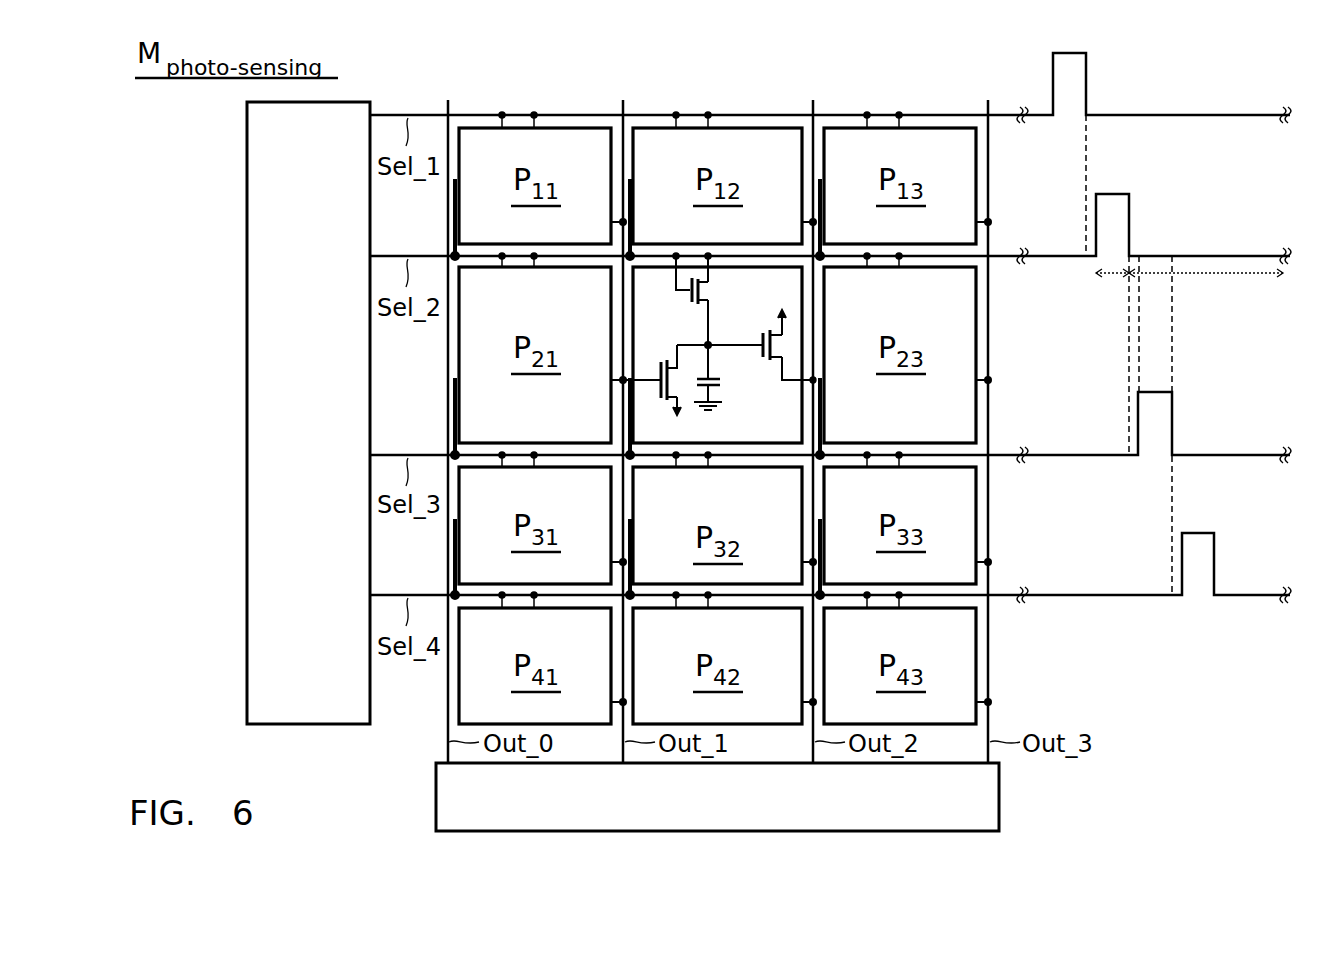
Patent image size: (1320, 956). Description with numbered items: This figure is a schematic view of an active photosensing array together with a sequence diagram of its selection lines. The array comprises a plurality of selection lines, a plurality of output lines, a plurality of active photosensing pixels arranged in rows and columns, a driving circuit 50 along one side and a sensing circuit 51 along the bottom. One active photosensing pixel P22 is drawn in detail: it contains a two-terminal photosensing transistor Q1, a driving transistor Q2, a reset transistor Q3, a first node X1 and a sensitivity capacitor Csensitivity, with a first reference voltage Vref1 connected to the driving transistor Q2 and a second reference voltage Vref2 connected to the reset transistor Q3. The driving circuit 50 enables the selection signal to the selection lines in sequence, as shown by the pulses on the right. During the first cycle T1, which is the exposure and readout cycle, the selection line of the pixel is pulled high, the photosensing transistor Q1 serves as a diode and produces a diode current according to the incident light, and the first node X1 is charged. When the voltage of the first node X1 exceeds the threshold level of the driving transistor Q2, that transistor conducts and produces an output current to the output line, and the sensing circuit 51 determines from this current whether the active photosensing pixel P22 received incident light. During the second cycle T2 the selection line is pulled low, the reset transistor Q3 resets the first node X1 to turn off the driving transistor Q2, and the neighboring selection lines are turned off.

The driving circuit 50 is at (310, 726).
The sensing circuit 51 is at (1000, 797).
The active photosensing pixel P22 is at (805, 417).
The two-terminal photosensing transistor Q1 is at (705, 290).
The driving transistor Q2 is at (762, 350).
The reset transistor Q3 is at (670, 367).
The first node X1 is at (708, 345).
The sensitivity capacitor Csensitivity is at (720, 383).
The first reference voltage Vref1 is at (764, 302).
The second reference voltage Vref2 is at (667, 419).
The first cycle T1 is at (1112, 293).
The second cycle T2 is at (1206, 293).